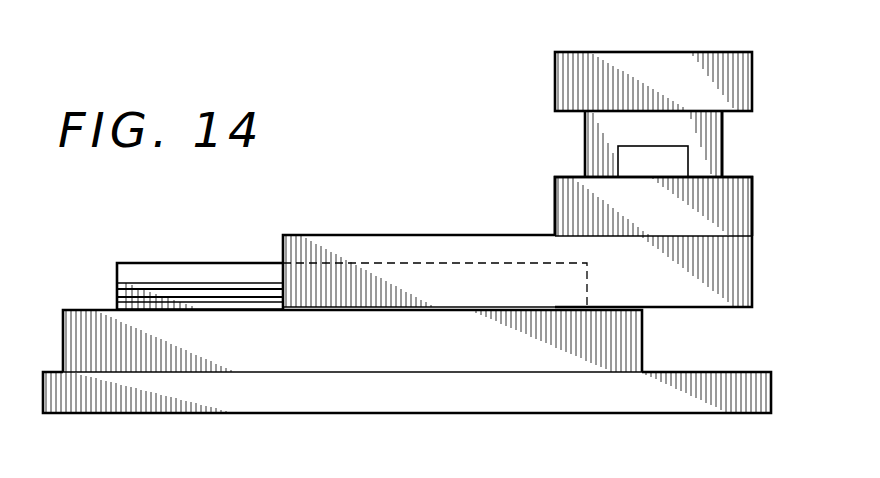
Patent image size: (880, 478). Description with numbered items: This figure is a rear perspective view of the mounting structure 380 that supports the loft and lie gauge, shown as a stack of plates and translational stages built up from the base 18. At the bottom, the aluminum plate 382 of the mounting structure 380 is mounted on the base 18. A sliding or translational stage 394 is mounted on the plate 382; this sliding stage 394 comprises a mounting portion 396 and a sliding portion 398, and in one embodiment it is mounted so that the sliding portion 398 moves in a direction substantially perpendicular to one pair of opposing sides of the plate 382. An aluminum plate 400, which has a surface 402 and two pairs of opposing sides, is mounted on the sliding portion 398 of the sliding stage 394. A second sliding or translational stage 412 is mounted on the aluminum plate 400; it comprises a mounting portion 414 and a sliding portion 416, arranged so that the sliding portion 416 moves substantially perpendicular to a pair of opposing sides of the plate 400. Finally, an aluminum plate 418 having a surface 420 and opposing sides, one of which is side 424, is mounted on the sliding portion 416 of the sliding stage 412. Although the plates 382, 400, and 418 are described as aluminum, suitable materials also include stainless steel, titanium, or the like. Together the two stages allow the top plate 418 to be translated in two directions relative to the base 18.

The base 18 is at (63, 400).
The mounting structure 380 is at (333, 152).
The plate 382 is at (318, 353).
The sliding stage 394 is at (768, 257).
The mounting portion 396 is at (132, 268).
The sliding portion 398 is at (335, 245).
The aluminum plate 400 is at (578, 207).
The surface 402 is at (556, 176).
The sliding stage 412 is at (562, 140).
The mounting portion 414 is at (665, 155).
The sliding portion 416 is at (705, 138).
The aluminum plate 418 is at (768, 80).
The surface 420 is at (587, 52).
The opposing side 424 is at (658, 65).